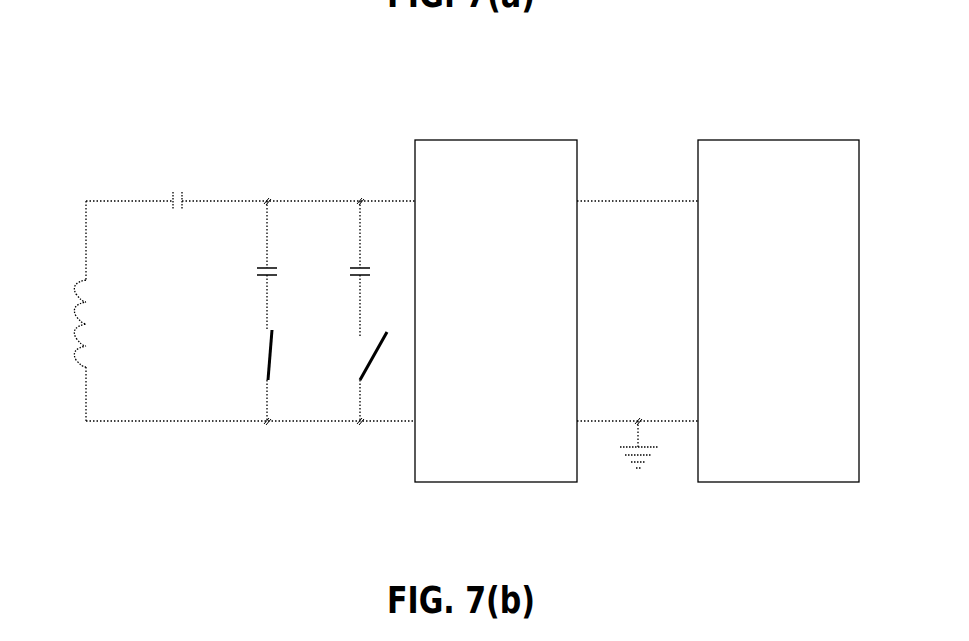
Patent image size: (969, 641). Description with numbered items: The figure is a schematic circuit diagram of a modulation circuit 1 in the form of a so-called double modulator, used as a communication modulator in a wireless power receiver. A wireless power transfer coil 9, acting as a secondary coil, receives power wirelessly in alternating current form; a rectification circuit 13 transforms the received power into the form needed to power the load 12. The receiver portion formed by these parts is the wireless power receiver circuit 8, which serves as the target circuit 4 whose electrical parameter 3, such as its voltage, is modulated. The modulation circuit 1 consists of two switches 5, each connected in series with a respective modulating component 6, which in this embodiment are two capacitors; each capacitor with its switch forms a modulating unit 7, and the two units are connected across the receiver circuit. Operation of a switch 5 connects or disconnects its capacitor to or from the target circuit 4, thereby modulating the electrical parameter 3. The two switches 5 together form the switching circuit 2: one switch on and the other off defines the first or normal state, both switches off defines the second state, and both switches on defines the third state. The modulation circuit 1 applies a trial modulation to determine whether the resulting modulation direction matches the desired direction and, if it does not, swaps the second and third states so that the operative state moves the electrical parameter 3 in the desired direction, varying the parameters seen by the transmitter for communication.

The modulation circuit 1 is at (318, 190).
The switching circuit 2 is at (312, 402).
The electrical parameter 3 is at (636, 168).
The target circuit 4 is at (188, 37).
The switch 5 is at (272, 353).
The modulating component 6 is at (272, 266).
The modulating unit 7 is at (237, 303).
The wireless power receiver circuit 8 is at (188, 97).
The wireless power transfer coil 9 is at (78, 302).
The load 12 is at (794, 140).
The rectification circuit 13 is at (489, 140).